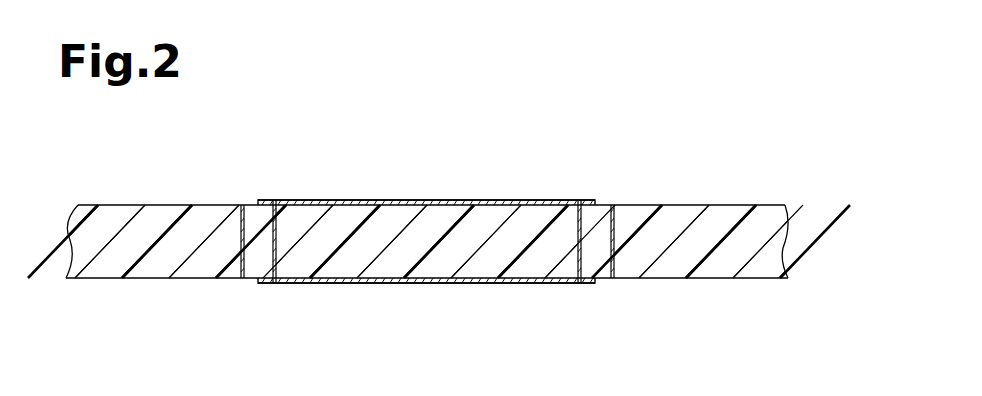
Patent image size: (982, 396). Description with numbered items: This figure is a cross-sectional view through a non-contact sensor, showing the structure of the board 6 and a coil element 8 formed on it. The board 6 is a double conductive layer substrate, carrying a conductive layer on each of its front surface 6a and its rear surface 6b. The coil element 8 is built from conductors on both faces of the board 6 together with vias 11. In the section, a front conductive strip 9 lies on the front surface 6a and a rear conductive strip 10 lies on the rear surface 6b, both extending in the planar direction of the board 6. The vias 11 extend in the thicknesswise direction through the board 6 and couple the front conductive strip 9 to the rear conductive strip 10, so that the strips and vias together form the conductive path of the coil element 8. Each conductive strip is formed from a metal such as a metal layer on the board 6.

The board 6 is at (108, 205).
The front surface 6a is at (158, 205).
The rear surface 6b is at (185, 278).
The coil element 8 is at (302, 200).
The front conductive strip 9 is at (340, 200).
The rear conductive strip 10 is at (407, 283).
The via 11 is at (240, 223).